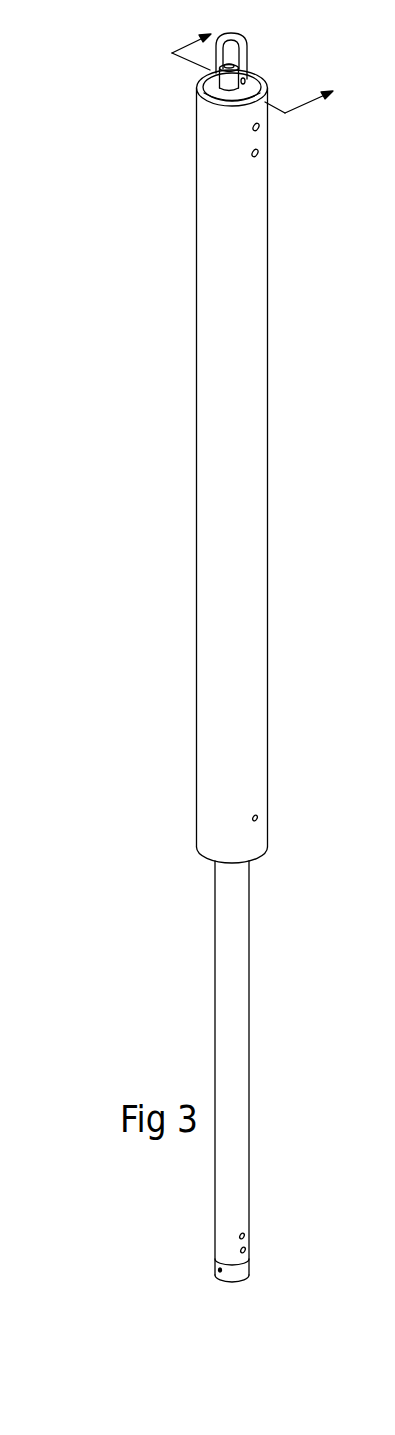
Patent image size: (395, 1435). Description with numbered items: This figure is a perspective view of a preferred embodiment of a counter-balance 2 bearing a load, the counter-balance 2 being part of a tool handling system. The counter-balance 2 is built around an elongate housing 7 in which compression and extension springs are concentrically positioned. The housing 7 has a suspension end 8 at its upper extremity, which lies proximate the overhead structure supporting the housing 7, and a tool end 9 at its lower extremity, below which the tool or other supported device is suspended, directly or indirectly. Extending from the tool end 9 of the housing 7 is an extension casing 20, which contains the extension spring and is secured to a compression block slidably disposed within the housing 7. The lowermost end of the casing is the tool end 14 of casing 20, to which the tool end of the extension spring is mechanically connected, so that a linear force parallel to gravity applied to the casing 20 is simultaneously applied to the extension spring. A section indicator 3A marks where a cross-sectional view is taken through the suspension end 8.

The counter-balance 2 is at (154, 484).
The section line 3A is at (246, 78).
The housing 7 is at (246, 376).
The suspension end 8 is at (208, 123).
The tool end 9 is at (257, 848).
The extension casing 20 is at (239, 1011).
The tool end of casing 14 is at (220, 1253).